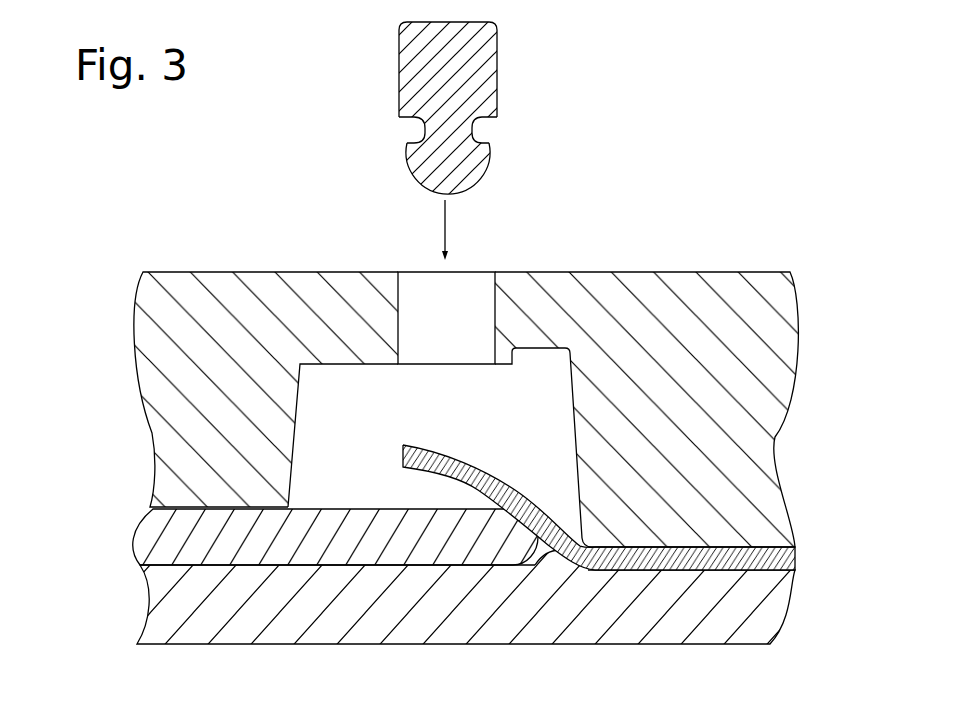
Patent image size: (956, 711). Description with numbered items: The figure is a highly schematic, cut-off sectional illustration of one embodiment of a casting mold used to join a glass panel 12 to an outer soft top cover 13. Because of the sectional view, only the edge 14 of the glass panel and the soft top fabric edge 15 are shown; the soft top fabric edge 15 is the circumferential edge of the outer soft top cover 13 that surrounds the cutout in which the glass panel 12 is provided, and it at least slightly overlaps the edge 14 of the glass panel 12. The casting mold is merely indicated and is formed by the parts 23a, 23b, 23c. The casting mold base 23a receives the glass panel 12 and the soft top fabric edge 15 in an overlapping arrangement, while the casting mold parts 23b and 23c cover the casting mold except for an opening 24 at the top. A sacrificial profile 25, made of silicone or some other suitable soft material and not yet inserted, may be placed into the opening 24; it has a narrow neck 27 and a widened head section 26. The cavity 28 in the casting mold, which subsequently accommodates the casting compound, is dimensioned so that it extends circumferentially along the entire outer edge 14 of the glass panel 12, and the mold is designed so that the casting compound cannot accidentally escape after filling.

The glass panel 12 is at (213, 542).
The outer soft top cover 13 is at (637, 570).
The edge of the glass panel 14 is at (495, 557).
The soft top fabric edge 15 is at (507, 477).
The casting mold base 23a is at (422, 620).
The casting mold part 23b is at (232, 300).
The casting mold part 23c is at (657, 305).
The opening 24 is at (469, 294).
The sacrificial profile 25 is at (468, 67).
The head section 26 is at (477, 181).
The neck 27 is at (474, 132).
The cavity 28 is at (337, 450).